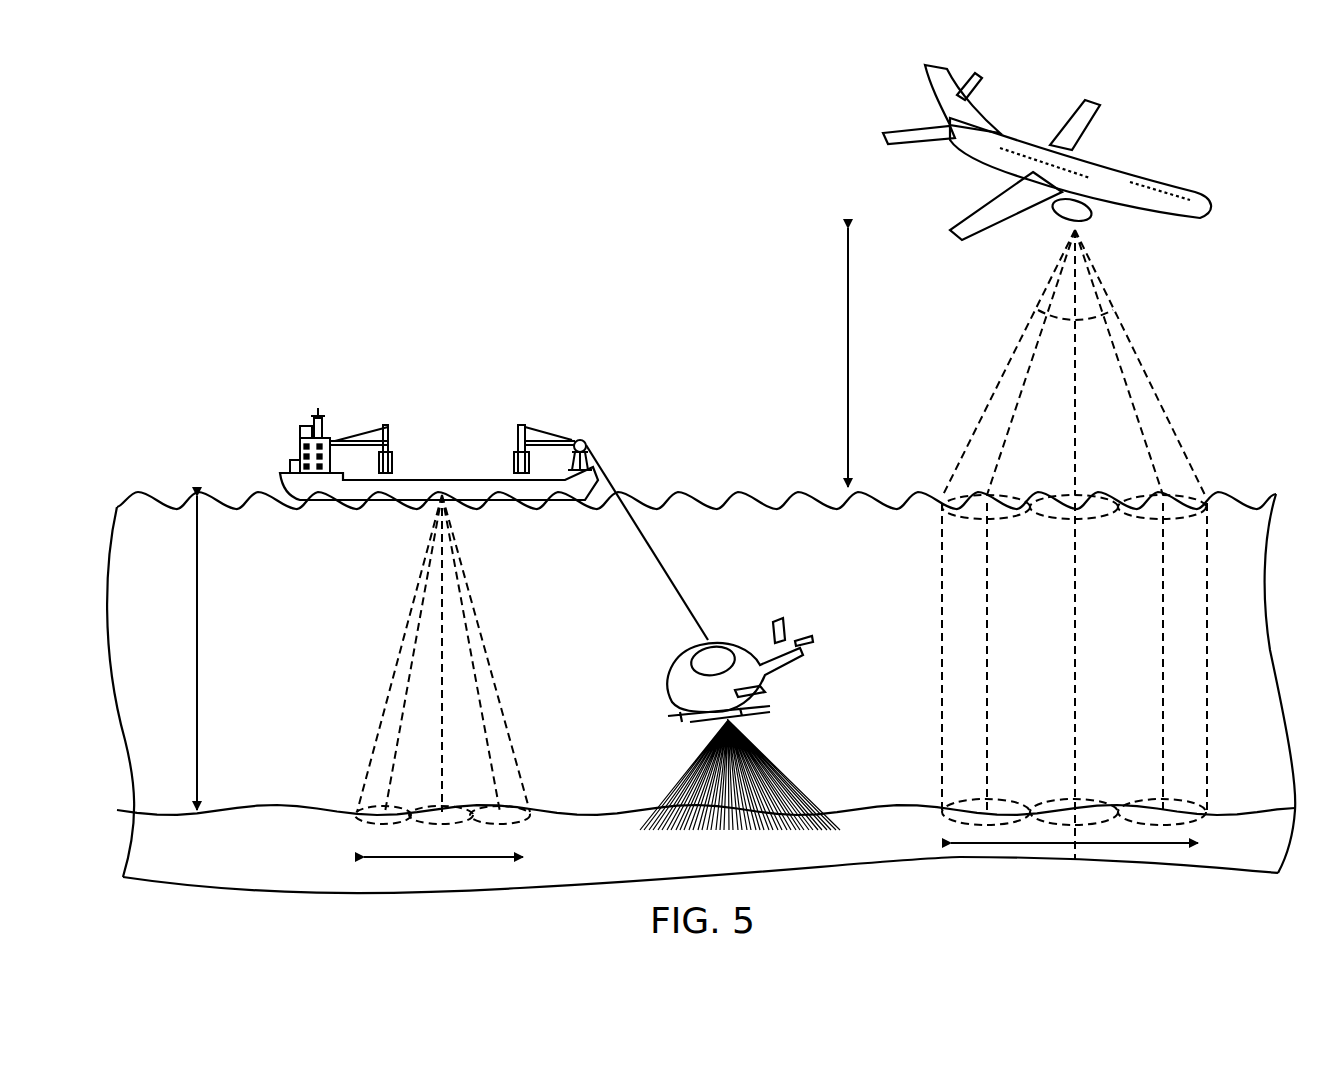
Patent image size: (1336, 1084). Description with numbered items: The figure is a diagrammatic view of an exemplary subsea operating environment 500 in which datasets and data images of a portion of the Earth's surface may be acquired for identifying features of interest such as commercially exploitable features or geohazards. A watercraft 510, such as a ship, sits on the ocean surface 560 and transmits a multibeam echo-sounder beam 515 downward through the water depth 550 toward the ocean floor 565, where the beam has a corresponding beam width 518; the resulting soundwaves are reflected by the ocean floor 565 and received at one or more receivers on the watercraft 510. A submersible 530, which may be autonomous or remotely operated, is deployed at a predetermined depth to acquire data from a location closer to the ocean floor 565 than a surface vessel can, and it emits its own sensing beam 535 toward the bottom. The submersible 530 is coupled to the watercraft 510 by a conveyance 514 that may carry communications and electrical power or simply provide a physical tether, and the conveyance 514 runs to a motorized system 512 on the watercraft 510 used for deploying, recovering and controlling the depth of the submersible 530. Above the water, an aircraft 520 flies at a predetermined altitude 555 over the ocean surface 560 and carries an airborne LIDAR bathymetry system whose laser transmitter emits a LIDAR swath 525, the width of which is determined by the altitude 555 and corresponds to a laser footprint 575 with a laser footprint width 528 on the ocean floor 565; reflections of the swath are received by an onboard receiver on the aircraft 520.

The survey system 500 is at (380, 262).
The watercraft 510 is at (267, 453).
The motorized system 512 is at (574, 438).
The conveyance 514 is at (675, 580).
The multibeam echo-sounder beam 515 is at (483, 622).
The beam width 518 is at (437, 859).
The aircraft 520 is at (1162, 134).
The LIDAR swath 525 is at (1173, 437).
The laser footprint width 528 is at (1077, 846).
The submersible 530 is at (793, 637).
The underwater vehicle sensor beam 535 is at (778, 763).
The water depth 550 is at (198, 633).
The altitude 555 is at (849, 359).
The ocean surface 560 is at (1215, 493).
The ocean floor 565 is at (583, 808).
The laser footprint 575 is at (1208, 807).